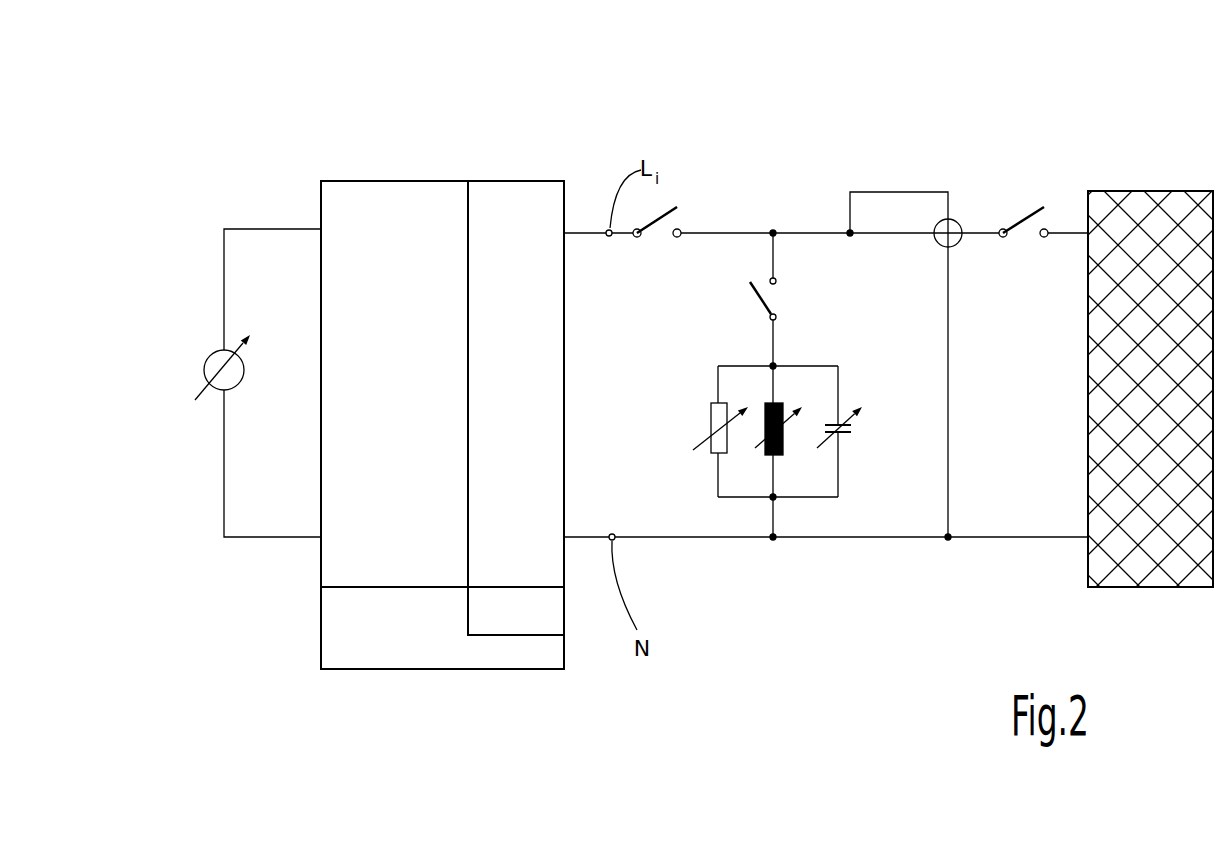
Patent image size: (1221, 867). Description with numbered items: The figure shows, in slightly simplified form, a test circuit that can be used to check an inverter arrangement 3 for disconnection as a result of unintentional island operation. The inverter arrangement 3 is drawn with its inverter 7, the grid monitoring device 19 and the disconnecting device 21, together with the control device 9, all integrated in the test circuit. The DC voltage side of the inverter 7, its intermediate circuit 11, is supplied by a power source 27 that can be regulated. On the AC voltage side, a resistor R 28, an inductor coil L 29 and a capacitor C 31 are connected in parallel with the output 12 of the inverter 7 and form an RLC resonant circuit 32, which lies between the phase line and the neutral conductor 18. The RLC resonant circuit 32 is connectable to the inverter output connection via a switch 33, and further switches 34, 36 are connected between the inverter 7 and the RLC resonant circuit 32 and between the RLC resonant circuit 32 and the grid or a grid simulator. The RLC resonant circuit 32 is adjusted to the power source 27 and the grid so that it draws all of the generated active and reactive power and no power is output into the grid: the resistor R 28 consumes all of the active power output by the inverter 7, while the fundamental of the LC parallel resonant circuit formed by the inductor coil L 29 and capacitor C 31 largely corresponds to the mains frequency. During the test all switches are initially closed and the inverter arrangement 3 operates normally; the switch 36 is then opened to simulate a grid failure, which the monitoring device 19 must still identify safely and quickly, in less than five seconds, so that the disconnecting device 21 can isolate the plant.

The inverter arrangement 3 is at (322, 142).
The inverter 7 is at (393, 205).
The control device 9 is at (380, 633).
The intermediate circuit 11 is at (300, 245).
The output 12 is at (581, 247).
The neutral conductor 18 is at (728, 540).
The monitoring device 19 is at (518, 610).
The disconnecting device 21 is at (508, 230).
The power source 27 is at (208, 365).
The resistor R 28 is at (712, 412).
The inductor coil L 29 is at (780, 403).
The capacitor C 31 is at (837, 410).
The RLC resonant circuit 32 is at (788, 480).
The switch 33 is at (759, 270).
The switch 34 is at (668, 203).
The switch 36 is at (1028, 210).